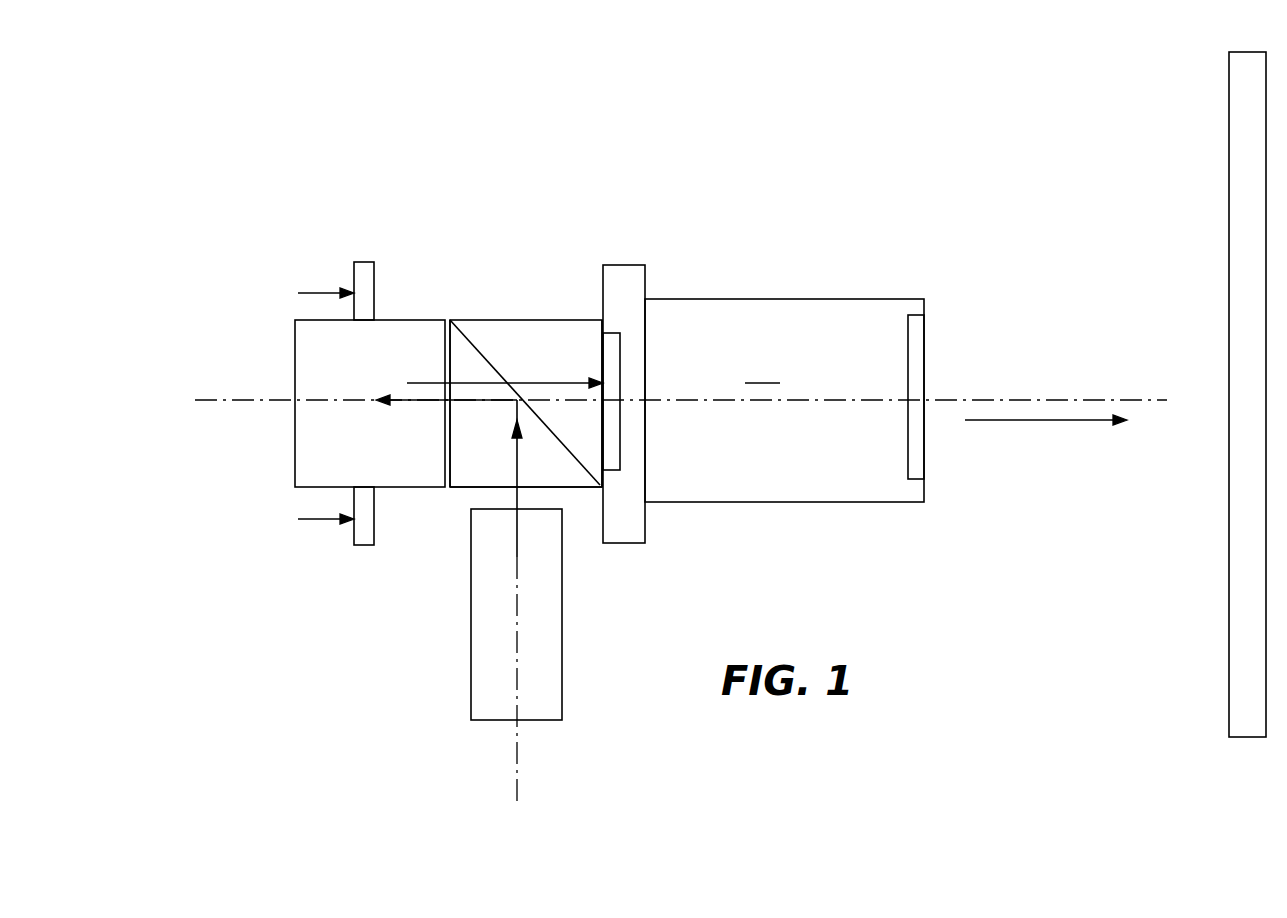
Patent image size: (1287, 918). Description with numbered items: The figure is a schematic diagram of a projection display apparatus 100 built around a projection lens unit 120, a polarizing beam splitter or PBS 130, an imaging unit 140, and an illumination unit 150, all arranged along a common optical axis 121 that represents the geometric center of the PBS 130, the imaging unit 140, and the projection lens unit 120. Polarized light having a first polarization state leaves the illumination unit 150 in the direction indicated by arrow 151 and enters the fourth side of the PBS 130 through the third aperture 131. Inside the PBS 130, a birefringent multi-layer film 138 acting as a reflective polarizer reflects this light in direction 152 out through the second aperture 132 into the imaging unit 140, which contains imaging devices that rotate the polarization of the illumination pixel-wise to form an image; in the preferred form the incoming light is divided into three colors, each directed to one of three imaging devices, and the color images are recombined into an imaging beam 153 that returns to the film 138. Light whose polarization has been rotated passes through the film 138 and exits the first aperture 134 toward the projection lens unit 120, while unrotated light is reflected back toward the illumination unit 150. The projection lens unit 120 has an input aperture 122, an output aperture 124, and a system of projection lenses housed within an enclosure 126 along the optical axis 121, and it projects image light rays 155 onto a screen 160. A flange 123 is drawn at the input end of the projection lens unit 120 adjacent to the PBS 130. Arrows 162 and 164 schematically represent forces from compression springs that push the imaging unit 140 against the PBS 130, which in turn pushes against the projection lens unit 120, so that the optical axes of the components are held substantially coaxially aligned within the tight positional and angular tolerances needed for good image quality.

The projection display apparatus 100 is at (656, 174).
The projection lens unit 120 is at (825, 379).
The optical axis 121 is at (1047, 397).
The input aperture 122 is at (612, 433).
The mounting flange 123 is at (603, 293).
The output aperture 124 is at (925, 377).
The enclosure 126 is at (762, 369).
The PBS 130 is at (513, 402).
The third aperture 131 is at (470, 485).
The second aperture 132 is at (453, 350).
The first aperture 134 is at (598, 450).
The birefringent multi-layer film 138 is at (490, 362).
The imaging unit 140 is at (292, 382).
The illumination unit 150 is at (568, 650).
The arrow indicating direction of incident polarized light 151 is at (517, 553).
The direction of reflected illumination 152 is at (472, 403).
The imaging beam 153 is at (407, 382).
The image light rays 155 is at (1073, 424).
The screen 160 is at (1229, 560).
The spring force arrow 162 is at (325, 522).
The spring force arrow 164 is at (318, 292).